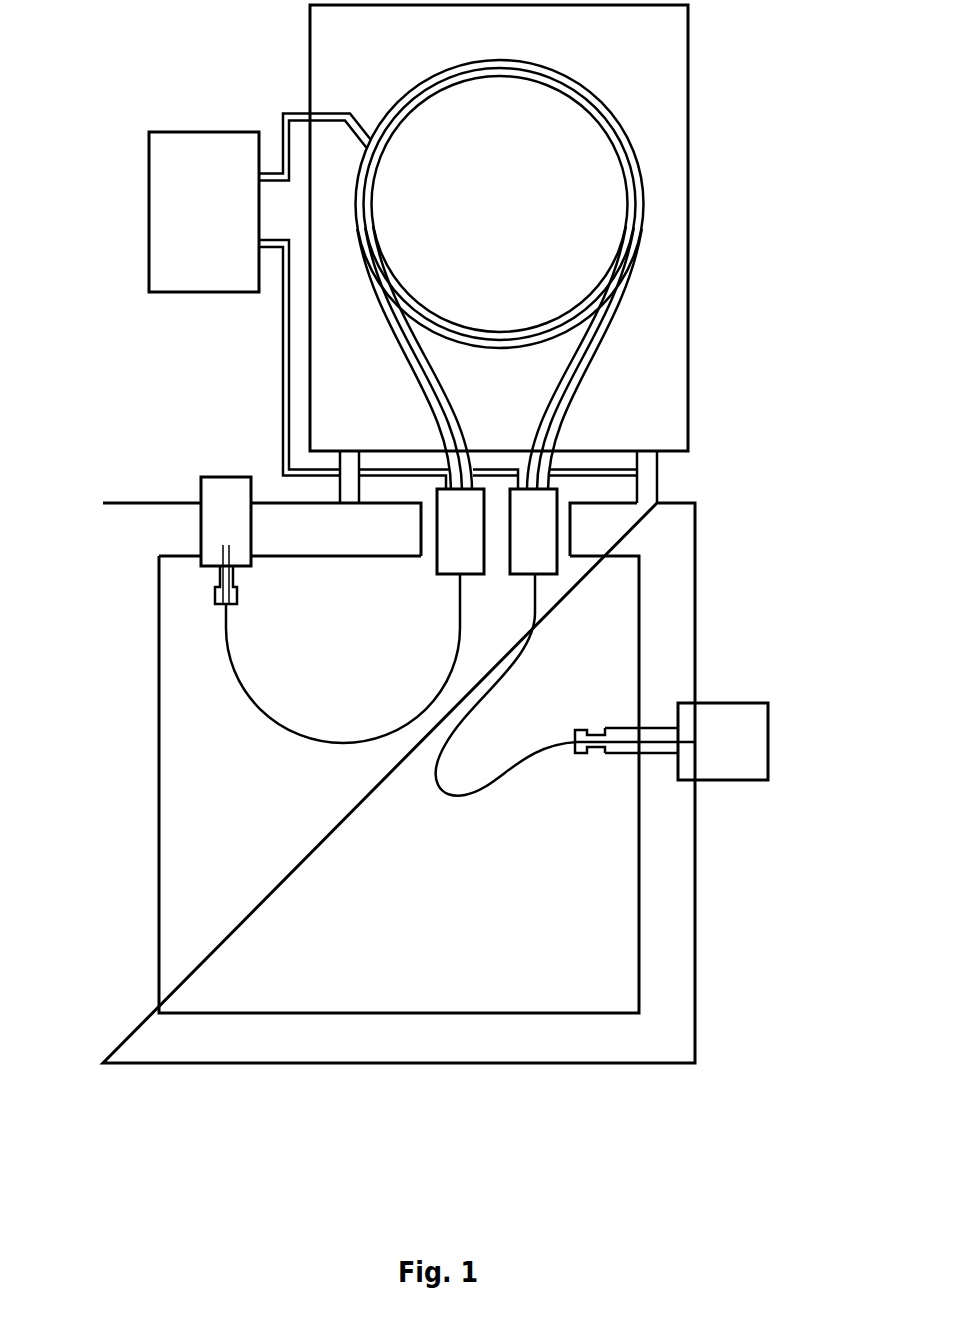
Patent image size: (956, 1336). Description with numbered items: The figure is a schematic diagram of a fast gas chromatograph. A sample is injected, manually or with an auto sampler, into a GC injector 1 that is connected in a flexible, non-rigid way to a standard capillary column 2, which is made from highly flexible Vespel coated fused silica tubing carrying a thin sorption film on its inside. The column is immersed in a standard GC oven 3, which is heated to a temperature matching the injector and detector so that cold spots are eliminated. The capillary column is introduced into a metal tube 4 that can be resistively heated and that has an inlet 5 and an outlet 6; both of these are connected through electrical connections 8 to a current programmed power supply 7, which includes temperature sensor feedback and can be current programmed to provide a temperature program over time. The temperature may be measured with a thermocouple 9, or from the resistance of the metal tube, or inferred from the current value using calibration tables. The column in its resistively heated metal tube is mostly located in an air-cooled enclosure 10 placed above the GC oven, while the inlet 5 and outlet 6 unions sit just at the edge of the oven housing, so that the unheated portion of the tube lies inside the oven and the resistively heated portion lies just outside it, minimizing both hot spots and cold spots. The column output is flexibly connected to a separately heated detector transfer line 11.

The GC injector 1 is at (227, 477).
The capillary column 2 is at (333, 746).
The GC oven 3 is at (162, 502).
The metal tube 4 is at (440, 413).
The inlet 5 is at (435, 568).
The outlet 6 is at (553, 580).
The power supply 7 is at (182, 293).
The electrical connections 8 is at (285, 365).
The thermocouple 9 is at (362, 127).
The air-cooled enclosure 10 is at (308, 83).
The detector transfer line 11 is at (722, 700).